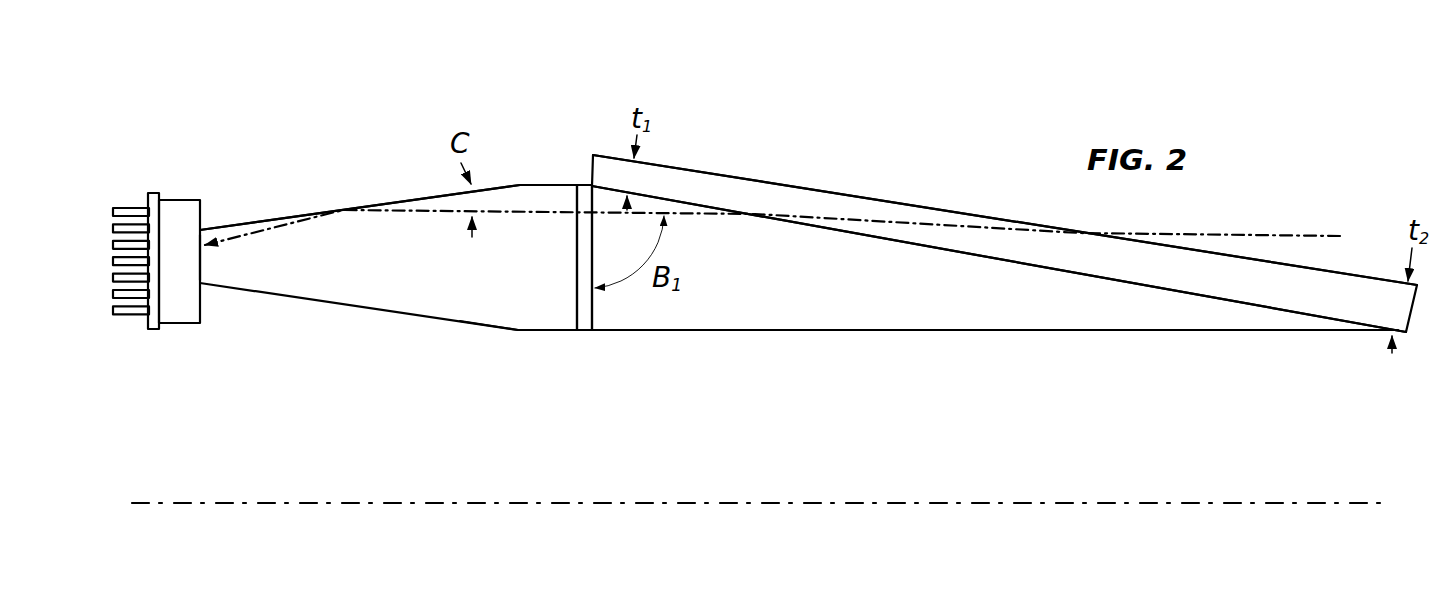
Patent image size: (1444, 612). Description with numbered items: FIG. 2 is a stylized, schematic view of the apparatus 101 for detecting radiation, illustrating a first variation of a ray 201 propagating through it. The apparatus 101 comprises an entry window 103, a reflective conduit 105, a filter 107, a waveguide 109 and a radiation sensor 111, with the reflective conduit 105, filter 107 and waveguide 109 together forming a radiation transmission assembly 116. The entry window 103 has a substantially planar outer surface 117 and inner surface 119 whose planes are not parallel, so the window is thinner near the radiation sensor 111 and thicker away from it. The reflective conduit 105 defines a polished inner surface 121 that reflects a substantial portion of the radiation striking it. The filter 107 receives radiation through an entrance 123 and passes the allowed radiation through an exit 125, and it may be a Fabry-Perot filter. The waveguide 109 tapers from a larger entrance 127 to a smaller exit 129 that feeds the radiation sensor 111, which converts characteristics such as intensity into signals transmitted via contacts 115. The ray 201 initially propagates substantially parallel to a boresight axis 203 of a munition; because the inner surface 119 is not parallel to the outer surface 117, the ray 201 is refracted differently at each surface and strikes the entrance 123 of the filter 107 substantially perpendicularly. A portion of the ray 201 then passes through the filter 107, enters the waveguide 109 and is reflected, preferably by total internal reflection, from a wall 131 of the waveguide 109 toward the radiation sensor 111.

The apparatus 101 is at (808, 229).
The entry window 103 is at (1004, 219).
The reflective conduit 105 is at (1118, 336).
The filter 107 is at (595, 286).
The waveguide 109 is at (388, 283).
The radiation sensor 111 is at (173, 312).
The contacts 115 is at (122, 310).
The radiation transmission assembly 116 is at (538, 337).
The outer surface 117 is at (720, 173).
The inner surface 119 is at (870, 237).
The inner surface 121 is at (773, 330).
The entrance 123 is at (592, 262).
The exit 125 is at (578, 302).
The entrance 127 is at (580, 313).
The exit 129 is at (200, 257).
The wall 131 is at (387, 203).
The ray 201 is at (1218, 236).
The boresight axis 203 is at (392, 503).